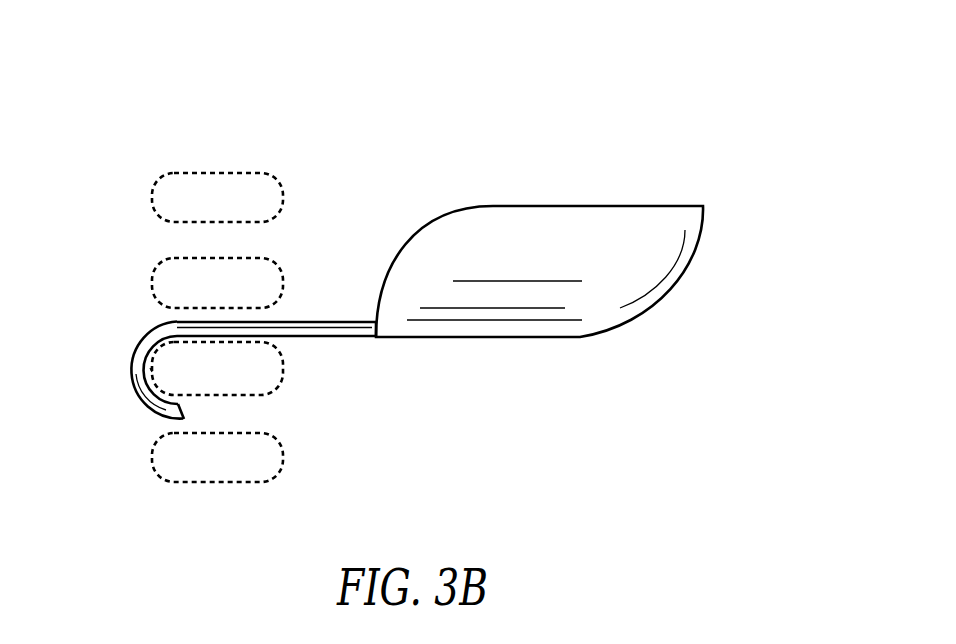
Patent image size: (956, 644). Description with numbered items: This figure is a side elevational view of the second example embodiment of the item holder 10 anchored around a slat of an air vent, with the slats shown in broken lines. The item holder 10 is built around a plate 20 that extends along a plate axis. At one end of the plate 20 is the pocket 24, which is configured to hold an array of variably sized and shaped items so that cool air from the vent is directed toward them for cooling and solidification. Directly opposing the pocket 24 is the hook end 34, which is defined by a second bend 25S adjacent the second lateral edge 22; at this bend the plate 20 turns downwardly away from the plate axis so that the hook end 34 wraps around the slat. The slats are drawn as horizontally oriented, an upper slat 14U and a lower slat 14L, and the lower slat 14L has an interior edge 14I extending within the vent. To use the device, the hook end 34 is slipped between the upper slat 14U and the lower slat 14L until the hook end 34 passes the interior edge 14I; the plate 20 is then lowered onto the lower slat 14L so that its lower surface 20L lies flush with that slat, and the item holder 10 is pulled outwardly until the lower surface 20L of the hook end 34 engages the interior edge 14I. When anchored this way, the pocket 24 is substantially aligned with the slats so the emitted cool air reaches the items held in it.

The item holder 10 is at (590, 92).
The pocket 24 is at (529, 166).
The plate 20 is at (355, 331).
The hook end 34 is at (121, 318).
The second bend 25S is at (128, 373).
The lower surface 20L is at (143, 399).
The second lateral edge 22 is at (184, 417).
The upper slat 14U is at (270, 268).
The lower slat 14L is at (272, 380).
The interior edge 14I is at (150, 370).